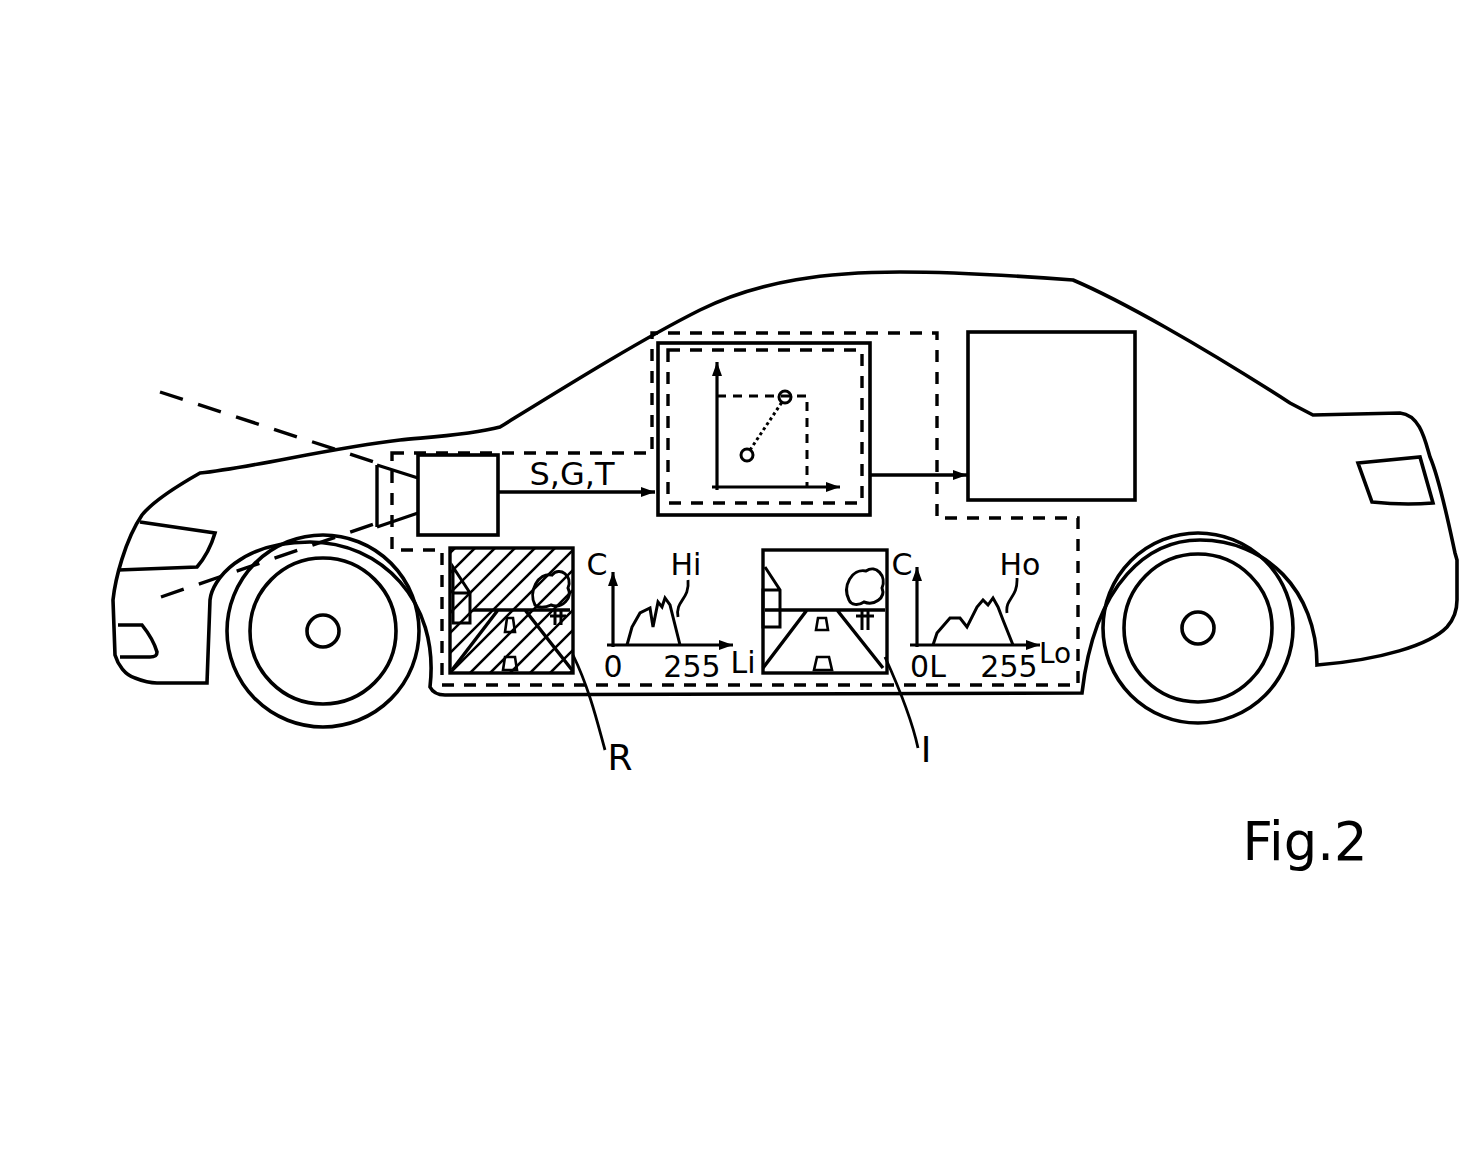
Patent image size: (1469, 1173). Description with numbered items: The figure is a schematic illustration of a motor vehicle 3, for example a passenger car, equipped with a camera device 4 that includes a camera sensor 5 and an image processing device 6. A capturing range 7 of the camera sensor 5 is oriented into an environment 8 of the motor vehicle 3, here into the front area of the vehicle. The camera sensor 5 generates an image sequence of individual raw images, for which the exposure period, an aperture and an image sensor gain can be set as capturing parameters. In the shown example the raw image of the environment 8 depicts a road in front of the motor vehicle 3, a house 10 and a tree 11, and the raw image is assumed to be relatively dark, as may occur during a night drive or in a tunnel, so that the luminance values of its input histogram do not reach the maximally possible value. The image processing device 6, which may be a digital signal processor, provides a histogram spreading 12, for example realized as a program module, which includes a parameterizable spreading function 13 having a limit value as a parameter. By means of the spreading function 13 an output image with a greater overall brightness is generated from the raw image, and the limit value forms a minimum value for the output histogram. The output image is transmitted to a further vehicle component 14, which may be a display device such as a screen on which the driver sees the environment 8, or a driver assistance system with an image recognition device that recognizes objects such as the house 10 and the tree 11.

The motor vehicle 3 is at (975, 277).
The camera device 4 is at (513, 450).
The camera sensor 5 is at (453, 453).
The image processing device 6 is at (757, 343).
The capturing range 7 is at (265, 425).
The environment 8 is at (128, 478).
The house 10 is at (450, 607).
The tree 11 is at (523, 547).
The histogram spreading 12 is at (830, 350).
The spreading function 13 is at (763, 430).
The vehicle component 14 is at (1052, 332).